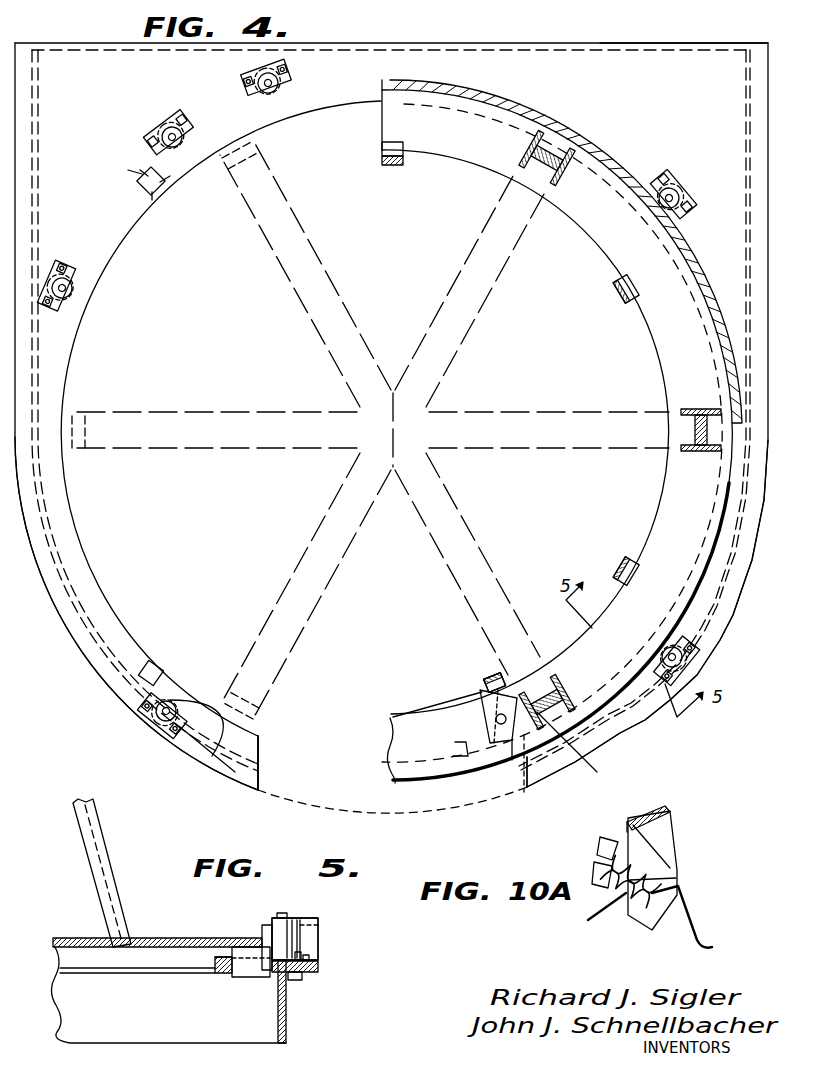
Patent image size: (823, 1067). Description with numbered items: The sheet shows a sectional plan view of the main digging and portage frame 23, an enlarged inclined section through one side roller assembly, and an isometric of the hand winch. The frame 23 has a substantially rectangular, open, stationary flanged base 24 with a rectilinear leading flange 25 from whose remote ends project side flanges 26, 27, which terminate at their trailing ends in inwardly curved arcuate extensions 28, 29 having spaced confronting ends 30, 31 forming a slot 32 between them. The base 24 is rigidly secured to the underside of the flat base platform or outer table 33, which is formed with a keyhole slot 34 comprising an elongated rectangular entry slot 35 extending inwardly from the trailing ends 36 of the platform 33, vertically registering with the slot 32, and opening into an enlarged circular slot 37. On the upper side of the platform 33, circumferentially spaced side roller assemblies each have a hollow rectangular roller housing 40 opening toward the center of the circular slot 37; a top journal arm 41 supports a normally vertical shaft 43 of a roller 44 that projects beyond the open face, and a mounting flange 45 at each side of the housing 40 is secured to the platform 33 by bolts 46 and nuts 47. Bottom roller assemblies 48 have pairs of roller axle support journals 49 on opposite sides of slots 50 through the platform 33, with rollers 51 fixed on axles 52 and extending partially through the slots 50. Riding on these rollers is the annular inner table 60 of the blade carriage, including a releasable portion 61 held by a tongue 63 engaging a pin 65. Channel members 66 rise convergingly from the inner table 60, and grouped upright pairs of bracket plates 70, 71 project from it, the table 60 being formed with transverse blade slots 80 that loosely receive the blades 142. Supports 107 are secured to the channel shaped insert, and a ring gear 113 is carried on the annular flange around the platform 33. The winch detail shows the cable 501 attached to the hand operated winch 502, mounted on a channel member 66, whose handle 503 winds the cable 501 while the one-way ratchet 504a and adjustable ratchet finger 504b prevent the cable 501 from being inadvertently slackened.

In FIG. 4, the main digging and portage frame 23 is at (448, 44).
In FIG. 4, the flanged base 24 is at (637, 38).
In FIG. 4, the leading flange 25 is at (541, 50).
In FIG. 4, the side flange 26 is at (40, 171).
In FIG. 4, the side flange 27 is at (747, 118).
In FIG. 4, the arcuate extension 28 is at (76, 600).
In FIG. 4, the arcuate extension 29 is at (712, 516).
In FIG. 5, the arcuate extension 29 is at (288, 1025).
In FIG. 4, the confronting end 30 is at (260, 770).
In FIG. 4, the confronting end 31 is at (515, 776).
In FIG. 4, the slot 32 is at (392, 802).
In FIG. 4, the base platform or outer table 33 is at (700, 60).
In FIG. 5, the base platform or outer table 33 is at (319, 968).
In FIG. 4, the keyhole slot 34 is at (196, 688).
In FIG. 4, the entry slot 35 is at (265, 792).
In FIG. 4, the trailing ends 36 is at (245, 792).
In FIG. 4, the circular slot 37 is at (206, 752).
In FIG. 4, the roller housing 40 is at (395, 412).
In FIG. 5, the roller housing 40 is at (321, 925).
In FIG. 4, the top journal arm 41 is at (48, 318).
In FIG. 5, the top journal arm 41 is at (273, 920).
In FIG. 4, the shaft 43 is at (74, 300).
In FIG. 5, the shaft 43 is at (284, 912).
In FIG. 4, the roller 44 is at (184, 140).
In FIG. 5, the roller 44 is at (264, 930).
In FIG. 4, the mounting flange 45 is at (80, 262).
In FIG. 5, the mounting flange 45 is at (319, 962).
In FIG. 4, the bolts 46 is at (70, 260).
In FIG. 5, the bolts 46 is at (303, 953).
In FIG. 5, the nuts 47 is at (300, 980).
In FIG. 4, the bottom roller assemblies 48 is at (152, 200).
In FIG. 4, the roller axle support journals 49 is at (128, 171).
In FIG. 5, the roller axle support journals 49 is at (220, 959).
In FIG. 5, the slots 50 is at (266, 977).
In FIG. 4, the rollers 51 is at (156, 175).
In FIG. 5, the rollers 51 is at (241, 977).
In FIG. 4, the axles 52 is at (140, 170).
In FIG. 5, the axles 52 is at (226, 973).
In FIG. 4, the roller riding member or inner table 60 is at (705, 560).
In FIG. 5, the roller riding member or inner table 60 is at (176, 937).
In FIG. 4, the portion 61 is at (421, 715).
In FIG. 4, the tongue 63 is at (484, 690).
In FIG. 4, the pin 65 is at (495, 719).
In FIG. 4, the channel members 66 is at (403, 166).
In FIG. 5, the channel members 66 is at (113, 870).
In FIG. 10A, the channel members 66 is at (668, 812).
In FIG. 4, the bracket plate 70 is at (557, 176).
In FIG. 4, the bracket plate 71 is at (521, 147).
In FIG. 4, the blade slot 80 is at (579, 752).
In FIG. 4, the supports 107 is at (454, 748).
In FIG. 4, the ring gear 113 is at (603, 152).
In FIG. 4, the blades 142 is at (486, 460).
In FIG. 10A, the cable 501 is at (592, 920).
In FIG. 10A, the winch 502 is at (689, 886).
In FIG. 10A, the handle 503 is at (712, 946).
In FIG. 10A, the ratchet 504a is at (593, 870).
In FIG. 10A, the ratchet finger 504b is at (597, 845).